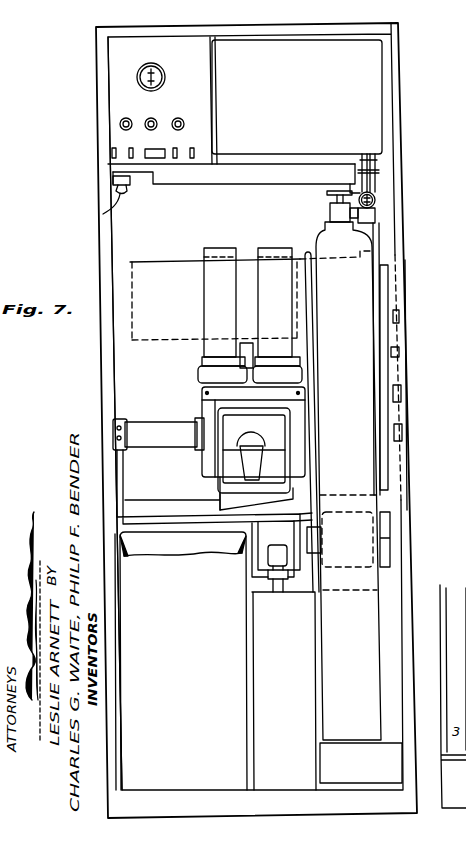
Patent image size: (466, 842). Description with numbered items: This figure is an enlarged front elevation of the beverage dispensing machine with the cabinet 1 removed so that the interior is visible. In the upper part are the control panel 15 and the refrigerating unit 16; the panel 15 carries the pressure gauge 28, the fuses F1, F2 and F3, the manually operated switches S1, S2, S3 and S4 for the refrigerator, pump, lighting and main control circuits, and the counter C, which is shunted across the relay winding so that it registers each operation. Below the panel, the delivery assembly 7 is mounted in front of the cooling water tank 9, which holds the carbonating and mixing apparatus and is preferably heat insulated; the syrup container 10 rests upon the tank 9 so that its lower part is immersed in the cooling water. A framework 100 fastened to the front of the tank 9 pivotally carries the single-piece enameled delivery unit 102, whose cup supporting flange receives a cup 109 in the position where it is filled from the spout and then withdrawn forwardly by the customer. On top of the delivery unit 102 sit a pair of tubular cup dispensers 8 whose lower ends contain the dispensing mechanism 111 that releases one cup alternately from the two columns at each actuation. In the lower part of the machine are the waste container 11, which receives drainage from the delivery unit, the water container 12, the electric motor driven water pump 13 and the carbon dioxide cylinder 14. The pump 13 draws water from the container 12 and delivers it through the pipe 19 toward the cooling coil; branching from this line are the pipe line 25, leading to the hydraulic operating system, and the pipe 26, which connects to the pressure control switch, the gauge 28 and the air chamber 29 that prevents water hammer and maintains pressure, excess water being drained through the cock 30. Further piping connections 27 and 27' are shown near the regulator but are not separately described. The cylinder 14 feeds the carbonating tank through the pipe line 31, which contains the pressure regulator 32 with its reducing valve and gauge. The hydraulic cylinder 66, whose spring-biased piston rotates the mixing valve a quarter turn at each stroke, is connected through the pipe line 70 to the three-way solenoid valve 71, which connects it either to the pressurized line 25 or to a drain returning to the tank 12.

The cabinet 1 is at (97, 401).
The delivery assembly 7 is at (207, 411).
The cup dispensers 8 is at (272, 268).
The cooling water tank 9 is at (108, 362).
The syrup container 10 is at (160, 262).
The waste container 11 is at (181, 661).
The water container 12 is at (284, 691).
The electric motor driven water pump 13 is at (390, 540).
The carbon dioxide cylinder 14 is at (359, 487).
The control panel 15 is at (108, 101).
The refrigerating unit 16 is at (297, 97).
The pipe 19 is at (316, 590).
The pipe line 25 is at (300, 568).
The pipe 26 is at (300, 186).
The pipe 27 is at (358, 166).
The pipe connection 27' is at (400, 159).
The pressure gauge 28 is at (143, 67).
The air chamber 29 is at (112, 182).
The cock 30 is at (116, 200).
The pipe line 31 is at (382, 228).
The pressure regulator 32 is at (376, 200).
The cylinder 66 is at (168, 438).
The pipe line 70 is at (124, 484).
The three-way solenoid valve 71 is at (279, 545).
The framework 100 is at (300, 443).
The delivery unit 102 is at (292, 490).
The cup 109 is at (247, 472).
The dispensing mechanism 111 is at (198, 374).
The fuse F1 is at (124, 112).
The fuse F2 is at (149, 111).
The fuse F3 is at (178, 110).
The switch S1 is at (129, 156).
The switch S2 is at (112, 153).
The switch S3 is at (178, 150).
The switch S4 is at (194, 153).
The counter C is at (148, 162).